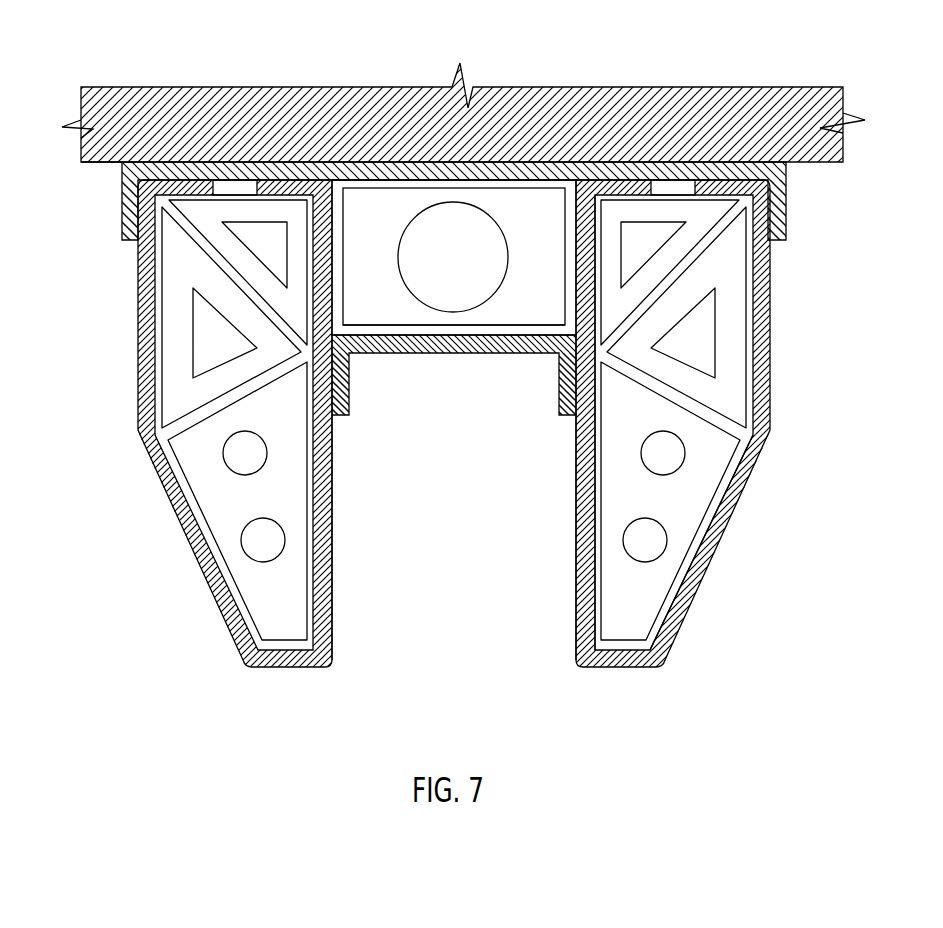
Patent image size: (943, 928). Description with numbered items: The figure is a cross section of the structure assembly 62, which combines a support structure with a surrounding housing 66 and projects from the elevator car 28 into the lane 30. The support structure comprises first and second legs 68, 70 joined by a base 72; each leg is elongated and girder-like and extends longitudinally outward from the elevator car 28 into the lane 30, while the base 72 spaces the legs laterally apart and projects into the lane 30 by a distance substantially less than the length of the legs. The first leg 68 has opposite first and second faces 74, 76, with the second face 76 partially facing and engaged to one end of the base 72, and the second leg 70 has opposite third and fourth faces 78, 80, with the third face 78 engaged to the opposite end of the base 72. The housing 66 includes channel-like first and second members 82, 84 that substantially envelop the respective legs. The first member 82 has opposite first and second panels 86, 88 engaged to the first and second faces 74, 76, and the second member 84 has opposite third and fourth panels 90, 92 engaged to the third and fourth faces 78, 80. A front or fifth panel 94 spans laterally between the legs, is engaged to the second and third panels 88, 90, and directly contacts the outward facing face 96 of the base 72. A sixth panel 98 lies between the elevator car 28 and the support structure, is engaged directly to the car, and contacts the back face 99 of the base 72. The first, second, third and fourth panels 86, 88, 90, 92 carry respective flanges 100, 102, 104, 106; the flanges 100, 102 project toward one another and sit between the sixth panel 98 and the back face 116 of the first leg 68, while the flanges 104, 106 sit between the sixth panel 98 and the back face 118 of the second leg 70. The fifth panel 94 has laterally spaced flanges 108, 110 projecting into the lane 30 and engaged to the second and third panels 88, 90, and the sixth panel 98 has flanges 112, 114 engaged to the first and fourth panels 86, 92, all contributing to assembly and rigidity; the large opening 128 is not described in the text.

The elevator car 28 is at (98, 164).
The lane 30 is at (441, 567).
The structure assembly 62 is at (166, 695).
The housing 66 is at (783, 148).
The first leg 68 is at (288, 517).
The second leg 70 is at (705, 455).
The base 72 is at (454, 182).
The first face 74 is at (152, 372).
The second face 76 is at (316, 463).
The third face 78 is at (592, 513).
The fourth face 80 is at (728, 498).
The first member 82 is at (229, 337).
The second member 84 is at (669, 348).
The first panel 86 is at (165, 505).
The second panel 88 is at (333, 580).
The third panel 90 is at (592, 563).
The fourth panel 92 is at (715, 535).
The fifth panel 94 is at (454, 388).
The outward facing face 96 is at (462, 340).
The sixth panel 98 is at (453, 135).
The back face 99 is at (507, 180).
The flange 100 is at (168, 182).
The flange 102 is at (302, 185).
The flange 104 is at (622, 188).
The flange 106 is at (740, 185).
The flange 108 is at (350, 382).
The flange 110 is at (558, 395).
The flange 112 is at (121, 200).
The flange 114 is at (788, 200).
The back face 116 is at (233, 195).
The back face 118 is at (674, 195).
The bore 128 is at (438, 271).